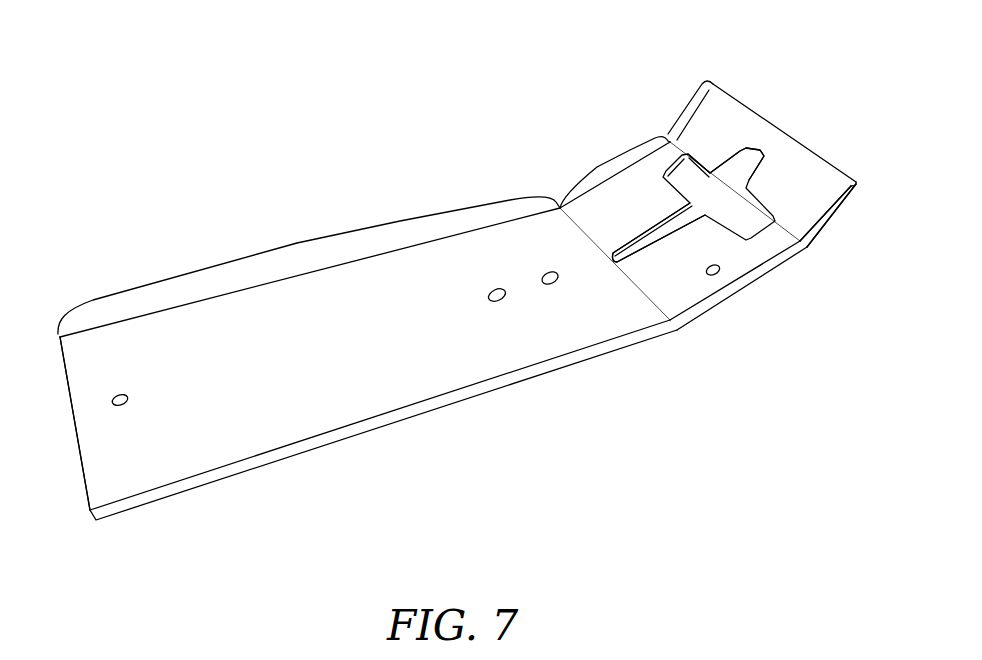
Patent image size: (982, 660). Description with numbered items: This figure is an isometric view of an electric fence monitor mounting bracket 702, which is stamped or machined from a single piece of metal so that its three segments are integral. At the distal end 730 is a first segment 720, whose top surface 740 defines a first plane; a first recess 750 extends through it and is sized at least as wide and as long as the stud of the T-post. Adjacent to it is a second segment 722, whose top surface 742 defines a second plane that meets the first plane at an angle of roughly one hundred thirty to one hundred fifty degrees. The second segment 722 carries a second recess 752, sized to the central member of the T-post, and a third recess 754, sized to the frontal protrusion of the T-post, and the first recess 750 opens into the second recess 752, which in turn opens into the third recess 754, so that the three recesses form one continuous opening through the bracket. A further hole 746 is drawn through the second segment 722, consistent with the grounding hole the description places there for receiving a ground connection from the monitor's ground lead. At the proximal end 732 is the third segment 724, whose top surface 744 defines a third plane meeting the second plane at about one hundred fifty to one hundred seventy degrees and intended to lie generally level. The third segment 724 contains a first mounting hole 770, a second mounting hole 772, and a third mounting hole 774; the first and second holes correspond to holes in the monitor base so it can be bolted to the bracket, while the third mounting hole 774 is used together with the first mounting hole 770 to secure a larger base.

The mounting bracket 702 is at (442, 278).
The first segment 720 is at (681, 111).
The second segment 722 is at (603, 163).
The third segment 724 is at (297, 243).
The distal end 730 is at (781, 128).
The proximal end 732 is at (84, 480).
The top surface 740 is at (822, 188).
The top surface 742 is at (673, 297).
The top surface 744 is at (240, 440).
The aperture 746 is at (721, 274).
The first recess 750 is at (748, 168).
The second recess 752 is at (699, 186).
The third recess 754 is at (665, 230).
The first mounting hole 770 is at (113, 399).
The second mounting hole 772 is at (499, 303).
The third mounting hole 774 is at (550, 289).